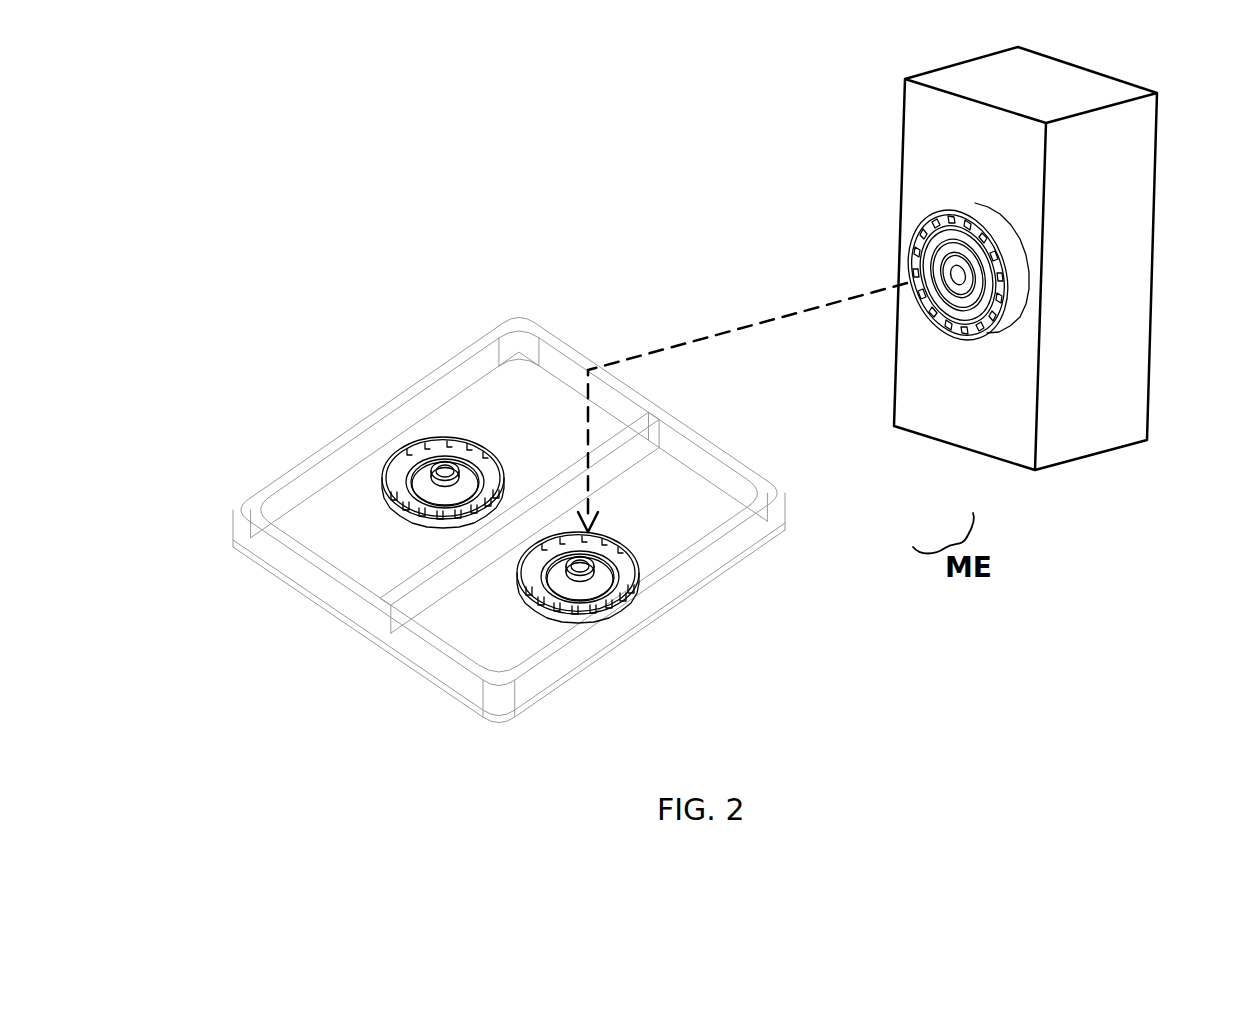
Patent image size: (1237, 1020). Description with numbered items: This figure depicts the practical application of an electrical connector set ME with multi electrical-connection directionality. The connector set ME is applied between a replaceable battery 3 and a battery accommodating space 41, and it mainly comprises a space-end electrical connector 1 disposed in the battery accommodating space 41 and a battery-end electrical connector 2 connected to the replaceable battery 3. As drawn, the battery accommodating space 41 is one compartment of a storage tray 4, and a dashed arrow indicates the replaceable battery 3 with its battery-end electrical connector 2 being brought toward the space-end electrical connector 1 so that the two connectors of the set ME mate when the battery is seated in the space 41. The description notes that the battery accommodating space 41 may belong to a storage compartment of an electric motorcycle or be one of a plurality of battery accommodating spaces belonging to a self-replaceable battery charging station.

The space-end electrical connector 1 is at (660, 577).
The battery-end electrical connector 2 is at (984, 358).
The replaceable battery 3 is at (893, 150).
The tray 4 is at (303, 430).
The battery accommodating space 41 is at (465, 643).